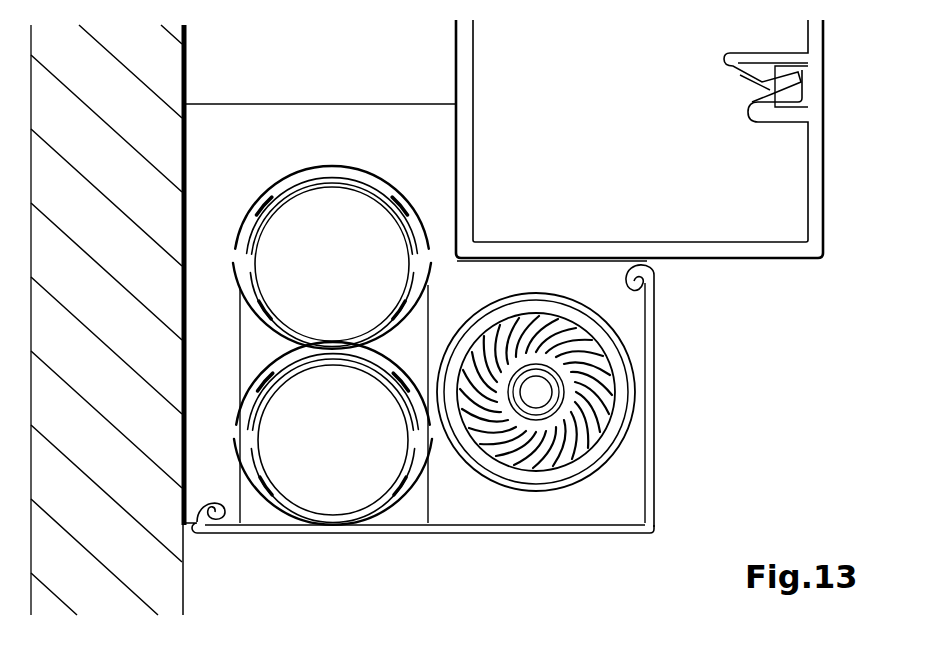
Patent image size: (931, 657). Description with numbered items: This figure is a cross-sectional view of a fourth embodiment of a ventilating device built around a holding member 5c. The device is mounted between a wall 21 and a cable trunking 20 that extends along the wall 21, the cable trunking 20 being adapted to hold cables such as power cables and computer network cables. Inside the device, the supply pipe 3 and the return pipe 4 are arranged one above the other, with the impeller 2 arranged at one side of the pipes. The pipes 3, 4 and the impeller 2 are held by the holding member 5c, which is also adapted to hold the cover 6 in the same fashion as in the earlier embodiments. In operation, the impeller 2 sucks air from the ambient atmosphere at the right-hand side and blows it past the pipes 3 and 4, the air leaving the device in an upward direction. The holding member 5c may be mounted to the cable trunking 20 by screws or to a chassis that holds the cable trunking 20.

The impeller 2 is at (593, 418).
The supply pipe 3 is at (262, 297).
The return pipe 4 is at (262, 478).
The holding member 5c is at (293, 138).
The cover 6 is at (553, 527).
The cable trunking 20 is at (727, 252).
The wall 21 is at (148, 572).